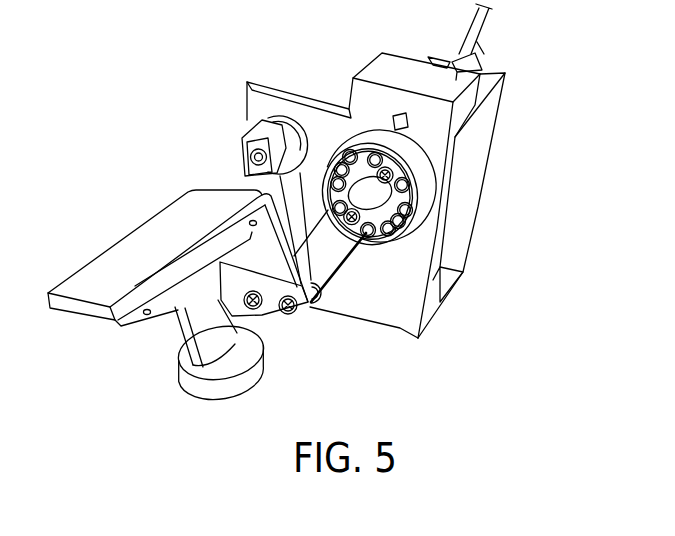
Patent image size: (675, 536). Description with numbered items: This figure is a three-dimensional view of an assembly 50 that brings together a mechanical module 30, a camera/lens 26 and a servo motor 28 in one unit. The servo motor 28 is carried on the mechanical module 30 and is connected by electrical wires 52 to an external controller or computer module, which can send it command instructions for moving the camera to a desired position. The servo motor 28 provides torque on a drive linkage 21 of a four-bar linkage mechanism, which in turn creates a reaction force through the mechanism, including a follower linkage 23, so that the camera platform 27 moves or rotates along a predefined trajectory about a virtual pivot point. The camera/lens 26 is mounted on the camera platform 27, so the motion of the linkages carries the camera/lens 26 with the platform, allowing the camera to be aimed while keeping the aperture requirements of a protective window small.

The assembly 50 is at (140, 84).
The mechanical module 30 is at (370, 50).
The servo motor 28 is at (469, 183).
The electrical wires 52 is at (480, 40).
The drive linkage 21 is at (330, 254).
The follower linkage 23 is at (246, 183).
The camera platform 27 is at (125, 262).
The camera/lens 26 is at (196, 326).